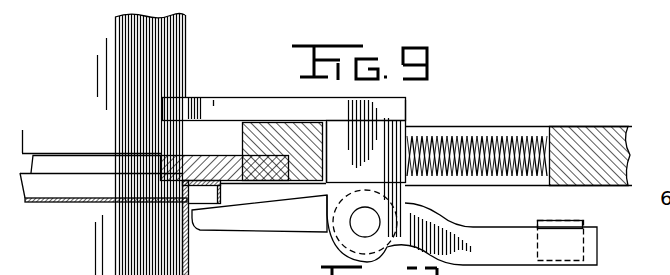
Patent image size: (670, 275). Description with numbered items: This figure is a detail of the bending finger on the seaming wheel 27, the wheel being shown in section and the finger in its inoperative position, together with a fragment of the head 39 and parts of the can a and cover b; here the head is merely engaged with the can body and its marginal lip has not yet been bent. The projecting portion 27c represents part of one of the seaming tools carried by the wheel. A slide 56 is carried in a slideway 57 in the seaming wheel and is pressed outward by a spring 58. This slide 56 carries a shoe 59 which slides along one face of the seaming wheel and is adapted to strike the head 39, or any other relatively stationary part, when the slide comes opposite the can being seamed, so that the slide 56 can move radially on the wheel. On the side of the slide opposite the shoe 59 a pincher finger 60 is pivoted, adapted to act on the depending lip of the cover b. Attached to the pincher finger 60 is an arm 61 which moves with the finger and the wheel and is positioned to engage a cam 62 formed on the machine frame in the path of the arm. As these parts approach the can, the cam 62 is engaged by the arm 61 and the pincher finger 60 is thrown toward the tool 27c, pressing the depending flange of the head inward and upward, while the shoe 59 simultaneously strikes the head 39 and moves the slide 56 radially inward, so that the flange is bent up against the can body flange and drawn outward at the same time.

The head 39 is at (115, 97).
The shoe 59 is at (284, 108).
The projecting portion 27c is at (228, 157).
The slide 56 is at (370, 160).
The slideway 57 is at (508, 177).
The spring 58 is at (500, 138).
The seaming wheel 27 is at (597, 127).
The pincher finger 60 is at (259, 213).
The arm 61 is at (462, 227).
The cam 62 is at (583, 223).
The can a is at (85, 274).
The cover b is at (52, 205).